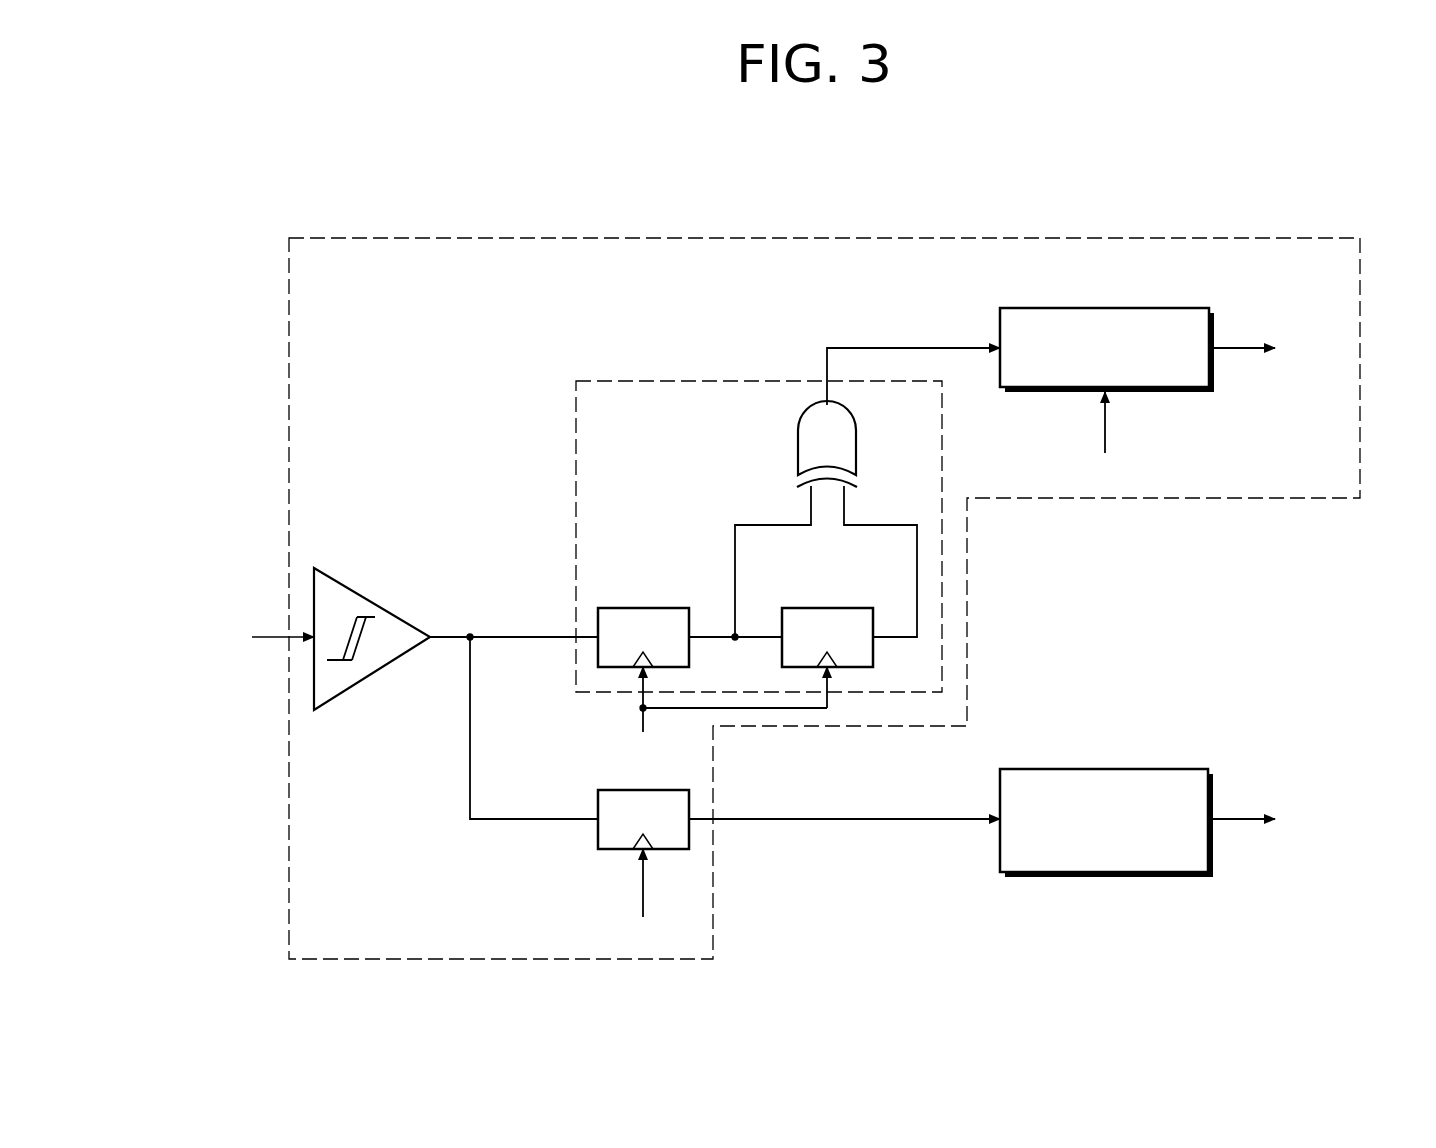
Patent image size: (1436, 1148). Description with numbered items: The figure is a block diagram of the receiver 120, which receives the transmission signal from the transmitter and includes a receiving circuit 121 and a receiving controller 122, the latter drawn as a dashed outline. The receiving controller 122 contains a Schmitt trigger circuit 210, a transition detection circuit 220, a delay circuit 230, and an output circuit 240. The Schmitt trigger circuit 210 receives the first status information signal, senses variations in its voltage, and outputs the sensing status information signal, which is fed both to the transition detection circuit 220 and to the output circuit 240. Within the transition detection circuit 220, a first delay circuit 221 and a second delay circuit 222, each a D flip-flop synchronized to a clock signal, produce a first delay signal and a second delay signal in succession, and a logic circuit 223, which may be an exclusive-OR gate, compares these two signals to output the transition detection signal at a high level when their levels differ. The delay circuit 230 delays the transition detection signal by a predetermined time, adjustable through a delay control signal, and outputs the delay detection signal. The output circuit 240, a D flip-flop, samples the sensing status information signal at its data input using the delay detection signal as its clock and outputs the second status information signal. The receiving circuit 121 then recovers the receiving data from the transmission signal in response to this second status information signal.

The receiver 120 is at (1290, 170).
The receiving circuit 121 is at (1152, 769).
The receiving controller 122 is at (957, 238).
The Schmitt trigger circuit 210 is at (375, 596).
The transition detection circuit 220 is at (672, 381).
The first delay circuit 221 is at (645, 608).
The second delay circuit 222 is at (828, 608).
The logic circuit 223 is at (798, 443).
The delay circuit 230 is at (1152, 308).
The output circuit 240 is at (613, 849).